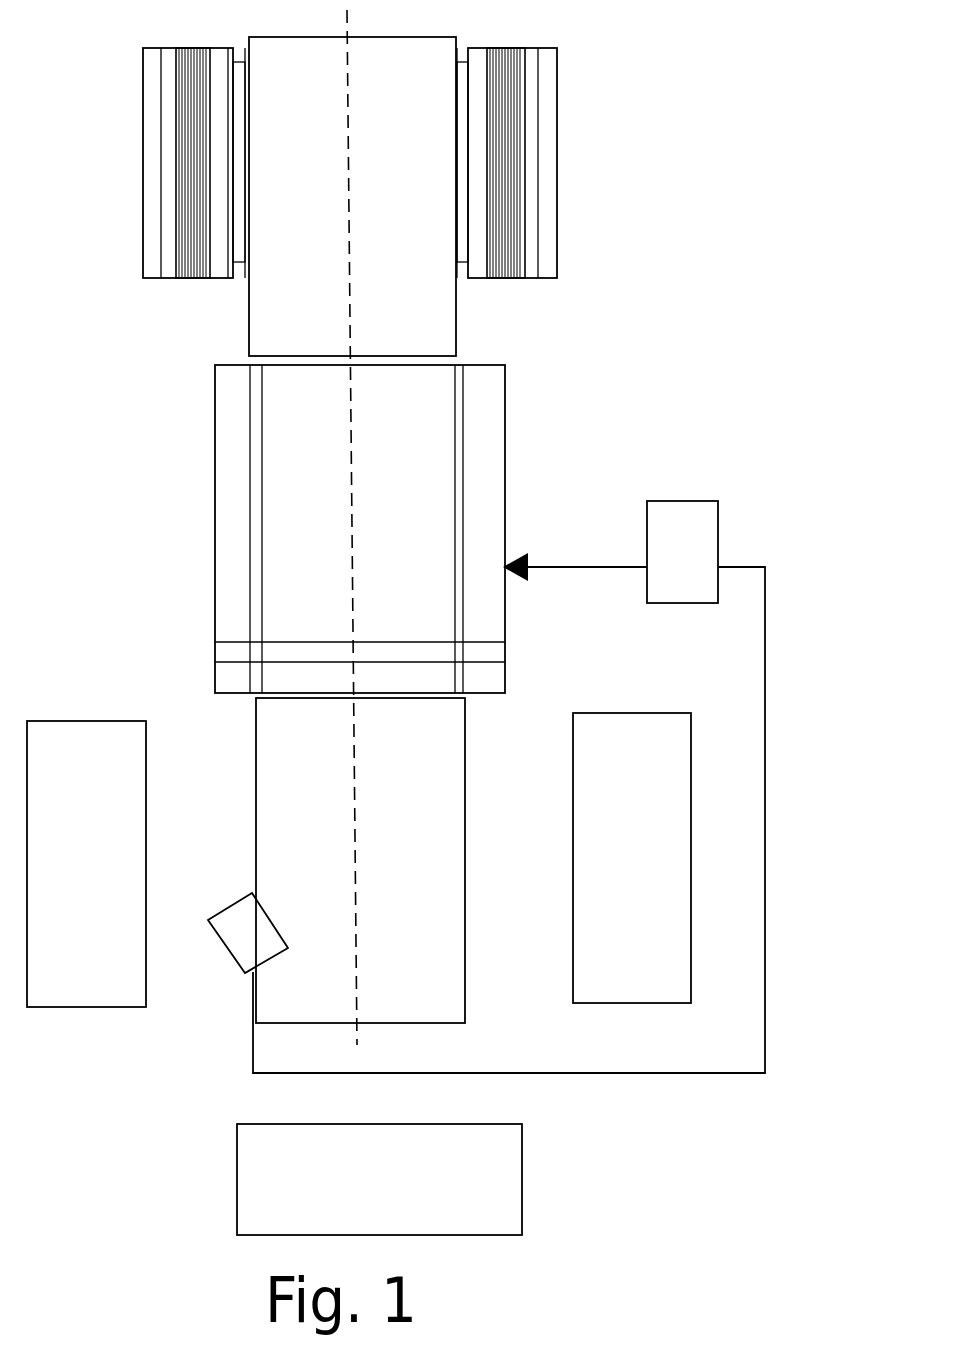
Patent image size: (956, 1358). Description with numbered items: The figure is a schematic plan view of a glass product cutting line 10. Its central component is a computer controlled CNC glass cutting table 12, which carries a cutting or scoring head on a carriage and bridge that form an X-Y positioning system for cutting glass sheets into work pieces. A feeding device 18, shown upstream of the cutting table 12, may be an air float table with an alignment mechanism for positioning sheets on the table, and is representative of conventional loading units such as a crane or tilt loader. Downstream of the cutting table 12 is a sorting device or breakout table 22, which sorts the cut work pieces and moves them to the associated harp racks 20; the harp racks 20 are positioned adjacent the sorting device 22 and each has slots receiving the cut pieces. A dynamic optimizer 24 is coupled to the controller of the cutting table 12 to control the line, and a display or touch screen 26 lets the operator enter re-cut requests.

The glass product cutting line 10 is at (674, 165).
The glass cutting table 12 is at (376, 525).
The feeding device 18 is at (373, 203).
The harp racks 20 is at (99, 857).
The sorting device or breakout table 22 is at (373, 843).
The dynamic optimizer 24 is at (683, 501).
The display and/or touch screen 26 is at (227, 950).